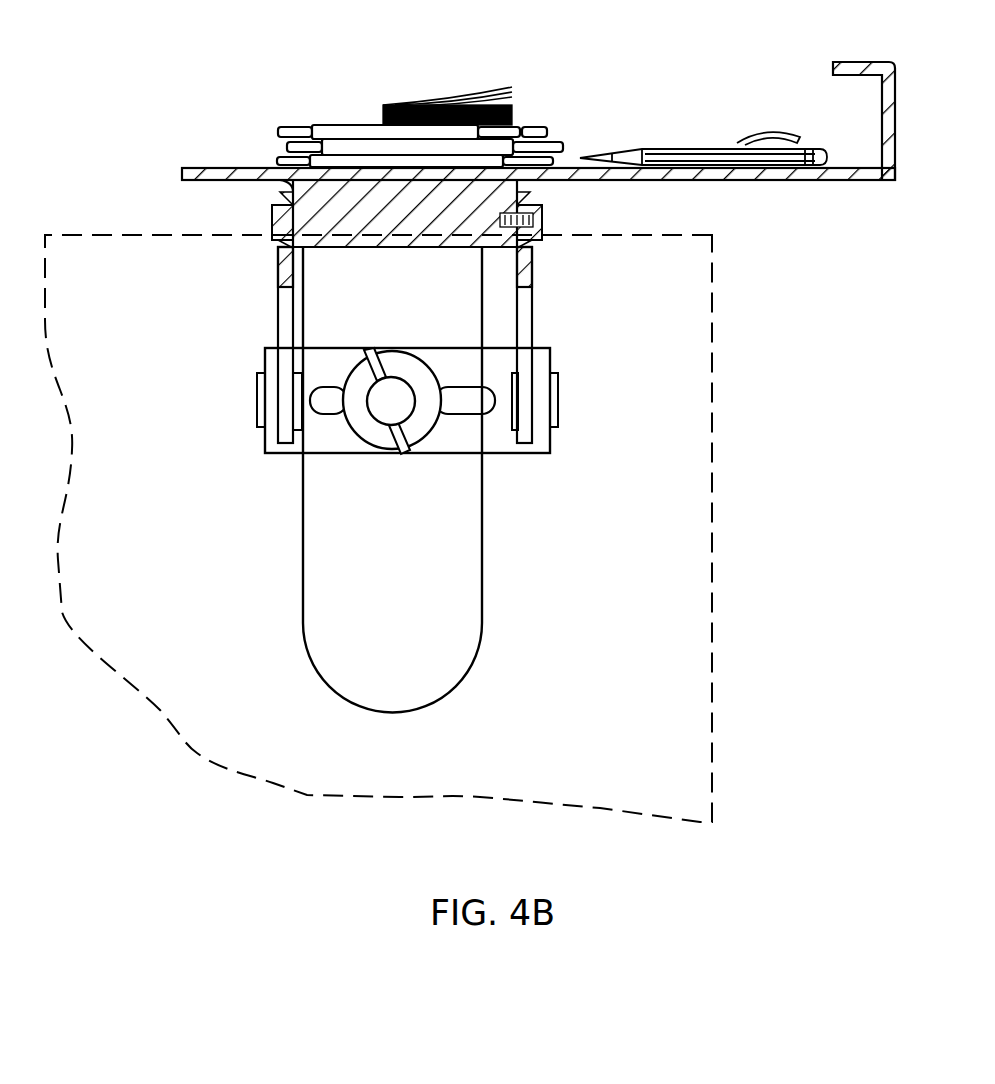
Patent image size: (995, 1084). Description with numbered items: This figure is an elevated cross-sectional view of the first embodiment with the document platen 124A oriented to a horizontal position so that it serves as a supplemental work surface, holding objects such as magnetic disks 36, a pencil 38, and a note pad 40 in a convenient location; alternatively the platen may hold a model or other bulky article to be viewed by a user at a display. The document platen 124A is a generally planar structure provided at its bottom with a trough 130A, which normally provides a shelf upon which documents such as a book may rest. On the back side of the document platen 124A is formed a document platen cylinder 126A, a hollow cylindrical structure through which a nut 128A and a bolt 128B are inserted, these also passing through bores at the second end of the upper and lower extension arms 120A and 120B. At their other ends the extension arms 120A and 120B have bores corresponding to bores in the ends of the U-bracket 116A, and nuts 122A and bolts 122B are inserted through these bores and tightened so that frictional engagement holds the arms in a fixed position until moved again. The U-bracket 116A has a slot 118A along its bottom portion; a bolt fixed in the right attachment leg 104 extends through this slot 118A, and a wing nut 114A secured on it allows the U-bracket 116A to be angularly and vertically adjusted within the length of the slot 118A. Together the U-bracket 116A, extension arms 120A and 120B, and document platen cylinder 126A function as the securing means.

The note pad 40 is at (480, 70).
The magnetic disks 36 is at (568, 114).
The pencil 38 is at (715, 122).
The trough 130A is at (827, 82).
The document platen 124A is at (233, 181).
The document platen cylinder 126A is at (400, 248).
The nut 128A is at (270, 219).
The bolt 128B is at (540, 213).
The upper extension arm 120A is at (275, 320).
The lower extension arm 120B is at (535, 320).
The right attachment leg 104 is at (410, 305).
The U-bracket 116A is at (498, 452).
The nuts 122A is at (257, 400).
The bolts 122B is at (560, 400).
The slot 118A is at (452, 393).
The wing nut 114A is at (386, 455).